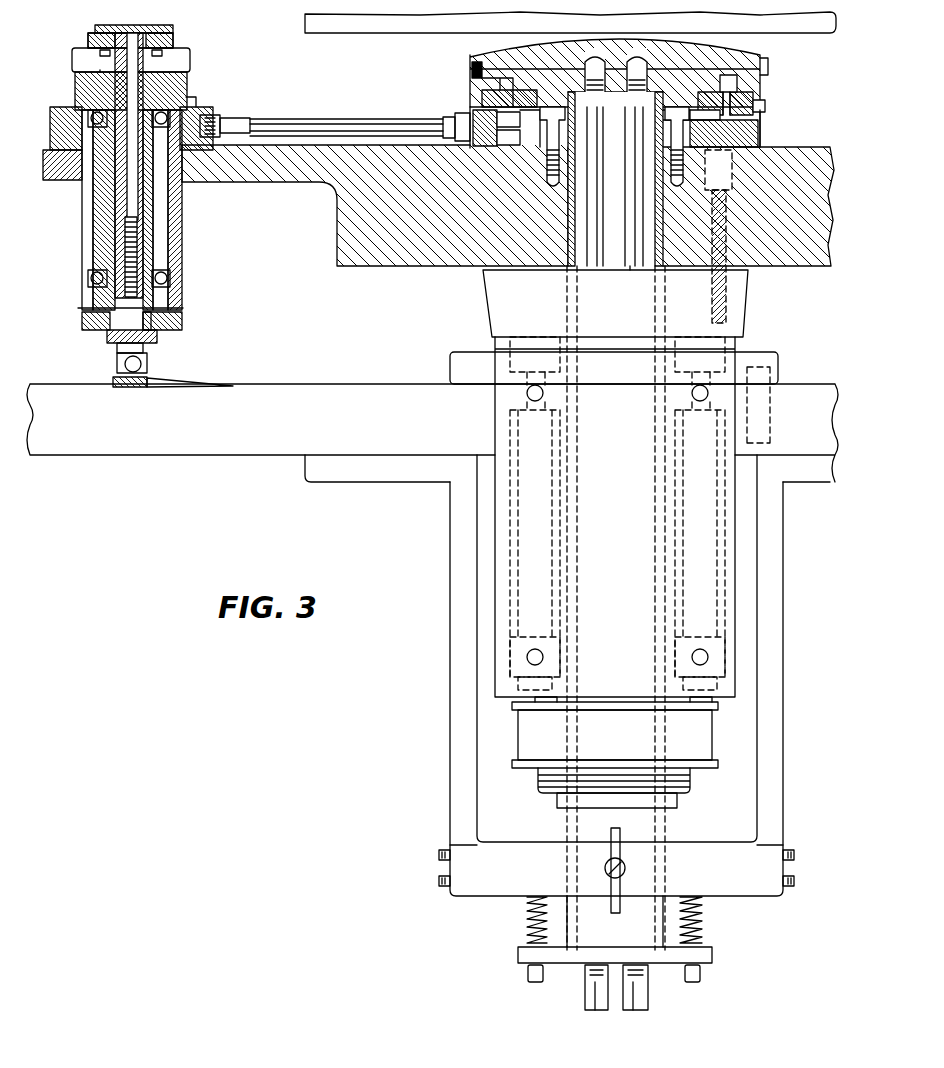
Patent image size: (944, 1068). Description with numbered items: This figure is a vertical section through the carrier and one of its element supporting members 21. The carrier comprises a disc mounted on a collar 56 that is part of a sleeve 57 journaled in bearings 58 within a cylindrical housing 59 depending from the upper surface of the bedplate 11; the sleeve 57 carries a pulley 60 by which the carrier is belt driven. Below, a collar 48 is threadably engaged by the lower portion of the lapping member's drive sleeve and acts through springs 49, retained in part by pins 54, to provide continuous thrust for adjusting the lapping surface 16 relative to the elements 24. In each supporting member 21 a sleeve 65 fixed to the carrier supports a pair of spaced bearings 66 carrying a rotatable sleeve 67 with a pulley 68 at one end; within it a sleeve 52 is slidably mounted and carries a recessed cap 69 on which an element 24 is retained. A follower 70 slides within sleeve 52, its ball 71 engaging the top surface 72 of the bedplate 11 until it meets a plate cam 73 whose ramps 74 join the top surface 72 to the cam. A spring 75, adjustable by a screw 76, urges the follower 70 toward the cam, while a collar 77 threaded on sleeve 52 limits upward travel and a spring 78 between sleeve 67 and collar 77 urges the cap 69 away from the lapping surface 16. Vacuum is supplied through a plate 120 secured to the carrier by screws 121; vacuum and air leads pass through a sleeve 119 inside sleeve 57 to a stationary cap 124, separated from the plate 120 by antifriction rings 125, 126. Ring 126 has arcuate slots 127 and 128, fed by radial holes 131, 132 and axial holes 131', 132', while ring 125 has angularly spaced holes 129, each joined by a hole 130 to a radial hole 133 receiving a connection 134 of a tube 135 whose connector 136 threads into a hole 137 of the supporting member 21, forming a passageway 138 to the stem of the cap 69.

The bedplate 11 is at (225, 450).
The lapping surface 16 is at (320, 33).
The element supporting member 21 is at (80, 45).
The element 24 is at (150, 27).
The collar 48 is at (518, 955).
The springs 49 is at (527, 915).
The sleeve 52 is at (120, 196).
The pins 54 is at (703, 912).
The collar 56 is at (490, 303).
The sleeve 57 is at (560, 530).
The bearings 58 is at (702, 390).
The cylindrical housing 59 is at (495, 577).
The pulley 60 is at (518, 737).
The sleeve 65 is at (203, 113).
The bearings 66 is at (92, 114).
The rotatable sleeve 67 is at (110, 230).
The pulley 68 is at (86, 322).
The recessed cap 69 is at (175, 38).
The follower 70 is at (148, 362).
The ball 71 is at (124, 368).
The top surface 72 is at (326, 384).
The plate cam 73 is at (140, 390).
The ramp 74 is at (198, 380).
The spring 75 is at (136, 244).
The screw 76 is at (135, 200).
The collar 77 is at (113, 341).
The spring 78 is at (156, 331).
The sleeve 119 is at (580, 268).
The plate 120 is at (743, 137).
The screws 121 is at (593, 218).
The stationary cap 124 is at (732, 53).
The ring 125 is at (760, 104).
The ring 126 is at (483, 93).
The arcuate slot 127 is at (473, 72).
The arcuate slot 128 is at (753, 90).
The holes 129 is at (490, 118).
The hole 130 is at (505, 140).
The radial hole 131 is at (575, 68).
The axial hole 131' is at (524, 69).
The radial hole 132 is at (615, 69).
The axial hole 132' is at (772, 67).
The radial hole 133 is at (548, 118).
The connection 134 is at (467, 113).
The tube 135 is at (330, 121).
The connector 136 is at (236, 126).
The hole 137 is at (225, 176).
The passageway 138 is at (186, 97).